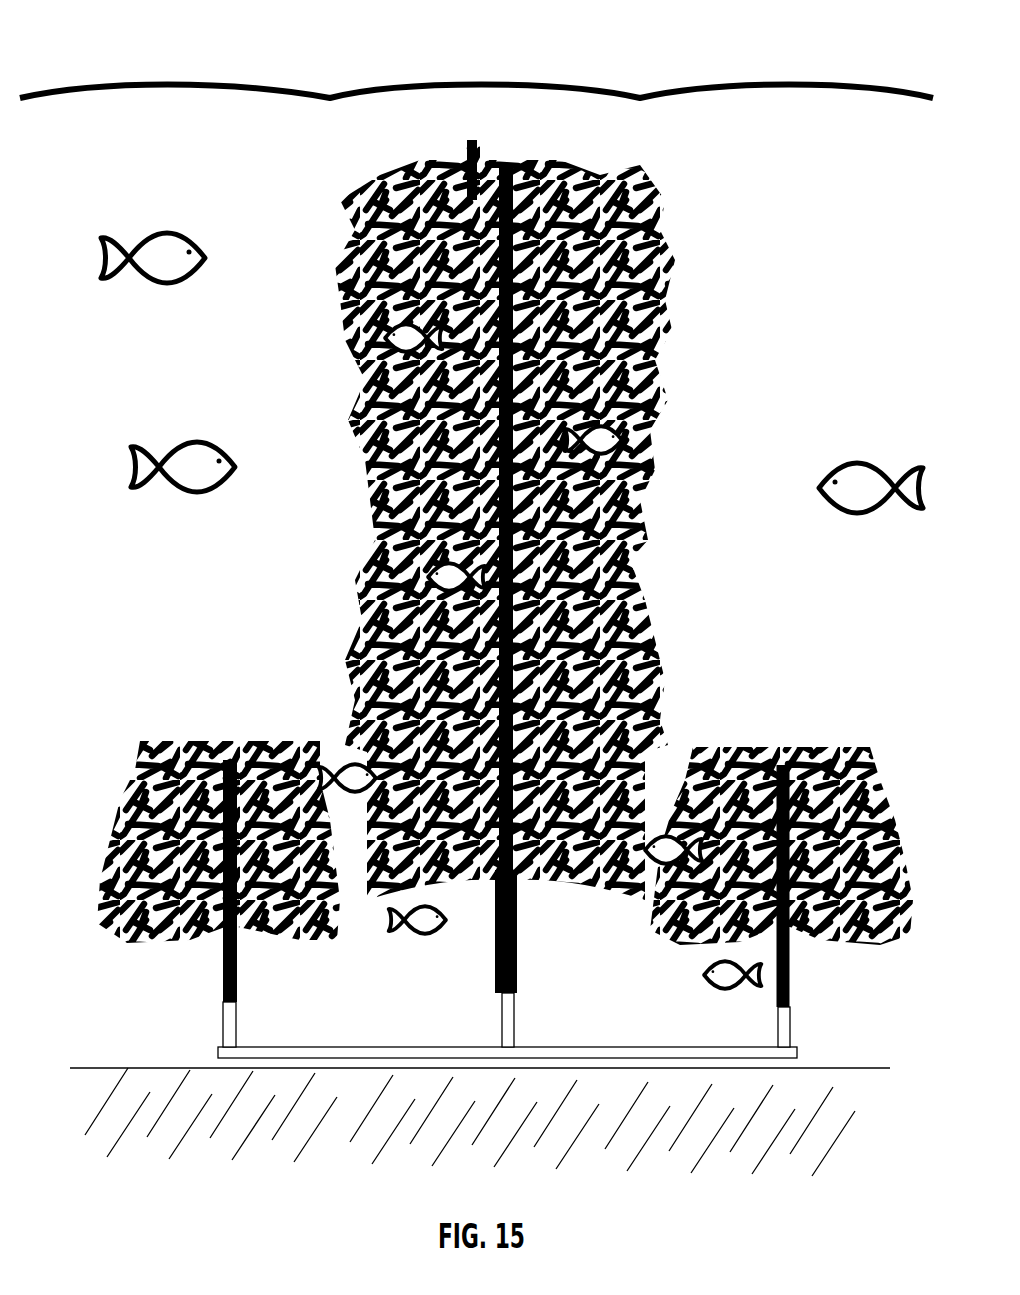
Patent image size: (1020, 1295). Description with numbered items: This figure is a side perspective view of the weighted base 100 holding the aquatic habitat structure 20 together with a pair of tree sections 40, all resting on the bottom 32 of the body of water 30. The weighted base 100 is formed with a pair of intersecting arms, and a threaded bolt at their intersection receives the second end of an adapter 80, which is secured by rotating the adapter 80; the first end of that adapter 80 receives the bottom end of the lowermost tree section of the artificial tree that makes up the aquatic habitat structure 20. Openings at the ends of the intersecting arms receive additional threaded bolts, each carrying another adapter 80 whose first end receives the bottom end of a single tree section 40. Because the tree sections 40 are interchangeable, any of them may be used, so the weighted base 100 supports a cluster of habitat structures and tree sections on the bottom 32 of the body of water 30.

The aquatic habitat structure 20 is at (507, 599).
The body of water 30 is at (228, 83).
The bottom of the body of water 32 is at (157, 1073).
The tree section 40 is at (157, 727).
The adapter 80 is at (237, 1017).
The weighted base 100 is at (437, 1047).